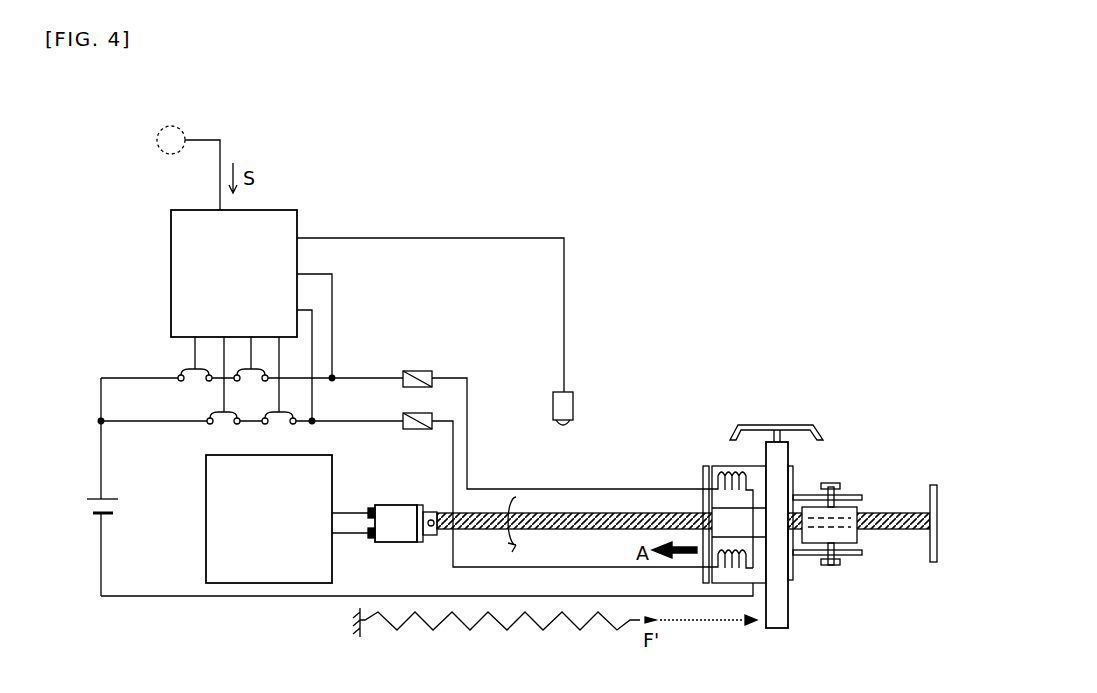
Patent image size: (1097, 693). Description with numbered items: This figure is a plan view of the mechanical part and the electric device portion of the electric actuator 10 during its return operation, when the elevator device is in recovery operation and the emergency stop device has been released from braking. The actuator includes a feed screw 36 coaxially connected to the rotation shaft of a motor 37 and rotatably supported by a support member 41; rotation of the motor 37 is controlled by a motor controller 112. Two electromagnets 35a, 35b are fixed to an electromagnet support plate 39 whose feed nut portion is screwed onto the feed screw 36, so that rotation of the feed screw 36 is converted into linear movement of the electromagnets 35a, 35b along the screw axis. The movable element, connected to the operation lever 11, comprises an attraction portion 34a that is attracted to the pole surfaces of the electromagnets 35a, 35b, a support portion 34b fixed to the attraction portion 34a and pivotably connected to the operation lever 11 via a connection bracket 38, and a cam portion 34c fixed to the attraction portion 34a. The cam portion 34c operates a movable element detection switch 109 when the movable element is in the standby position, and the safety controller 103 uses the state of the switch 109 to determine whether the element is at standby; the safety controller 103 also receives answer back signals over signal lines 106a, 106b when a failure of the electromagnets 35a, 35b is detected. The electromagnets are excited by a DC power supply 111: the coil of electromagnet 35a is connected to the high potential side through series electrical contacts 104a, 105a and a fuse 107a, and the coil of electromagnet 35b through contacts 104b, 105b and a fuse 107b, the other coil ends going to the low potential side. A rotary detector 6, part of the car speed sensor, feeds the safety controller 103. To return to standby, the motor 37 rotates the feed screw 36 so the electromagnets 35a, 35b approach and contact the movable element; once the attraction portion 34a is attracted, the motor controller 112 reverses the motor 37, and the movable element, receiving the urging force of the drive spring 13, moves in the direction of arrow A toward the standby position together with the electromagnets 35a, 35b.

The rotary detector 6 is at (159, 133).
The safety controller 103 is at (171, 250).
The electrical contact 104a is at (186, 370).
The electrical contact 104b is at (220, 414).
The electrical contact 105a is at (260, 371).
The electrical contact 105b is at (293, 418).
The signal line 106a is at (301, 273).
The signal line 106b is at (301, 309).
The fuse 107a is at (418, 372).
The fuse 107b is at (418, 430).
The movable element detection switch 109 is at (574, 405).
The DC power supply 111 is at (95, 508).
The motor controller 112 is at (206, 534).
The motor 37 is at (400, 506).
The feed screw 36 is at (603, 514).
The drive spring 13 is at (400, 629).
The electric actuator 10 is at (727, 368).
The electromagnet support plate 39 is at (705, 466).
The electromagnet 35a is at (717, 466).
The electromagnet 35b is at (710, 582).
The attraction portion 34a is at (788, 593).
The support portion 34b is at (858, 495).
The cam portion 34c is at (798, 425).
The connection bracket 38 is at (843, 548).
The operation lever 11 is at (846, 523).
The support member 41 is at (935, 485).